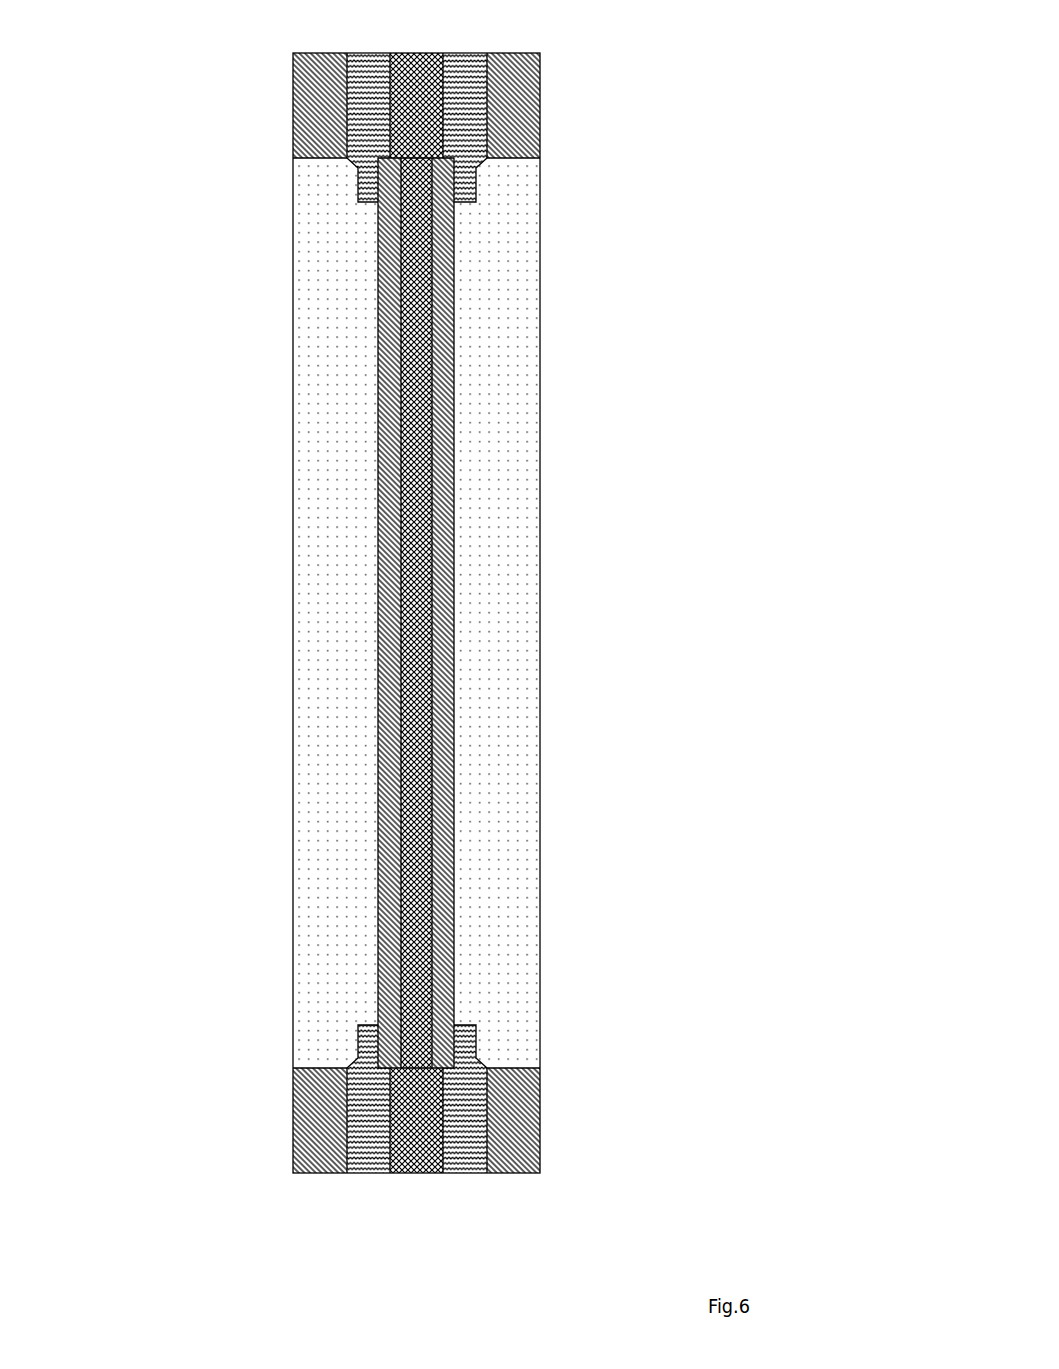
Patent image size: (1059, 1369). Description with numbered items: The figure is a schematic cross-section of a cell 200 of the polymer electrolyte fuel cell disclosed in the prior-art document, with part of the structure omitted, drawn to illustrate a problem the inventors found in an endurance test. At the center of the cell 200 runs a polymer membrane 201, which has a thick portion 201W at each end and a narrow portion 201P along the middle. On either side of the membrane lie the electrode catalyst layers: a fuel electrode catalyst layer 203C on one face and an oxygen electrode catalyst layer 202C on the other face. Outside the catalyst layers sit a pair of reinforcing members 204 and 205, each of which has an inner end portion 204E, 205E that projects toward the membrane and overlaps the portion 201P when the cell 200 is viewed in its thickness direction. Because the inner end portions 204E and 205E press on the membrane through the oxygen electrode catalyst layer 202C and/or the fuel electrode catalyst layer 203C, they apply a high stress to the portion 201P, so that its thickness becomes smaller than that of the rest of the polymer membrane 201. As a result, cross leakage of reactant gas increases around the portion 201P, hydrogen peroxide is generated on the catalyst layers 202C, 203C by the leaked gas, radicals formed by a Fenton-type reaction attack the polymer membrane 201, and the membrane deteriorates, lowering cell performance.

The cell 200 is at (438, 23).
The polymer membrane 201 is at (420, 1113).
The wide portion of core member 201W is at (417, 156).
The portion of the polymer membrane 201P is at (434, 200).
The oxygen electrode catalyst layer 202C is at (452, 620).
The fuel electrode catalyst layer 203C is at (388, 494).
The reinforcing member 204 is at (463, 1128).
The inner end portion of reinforcing member 204E is at (466, 1020).
The reinforcing member 205 is at (380, 1120).
The inner end portion of reinforcing member 205E is at (369, 205).